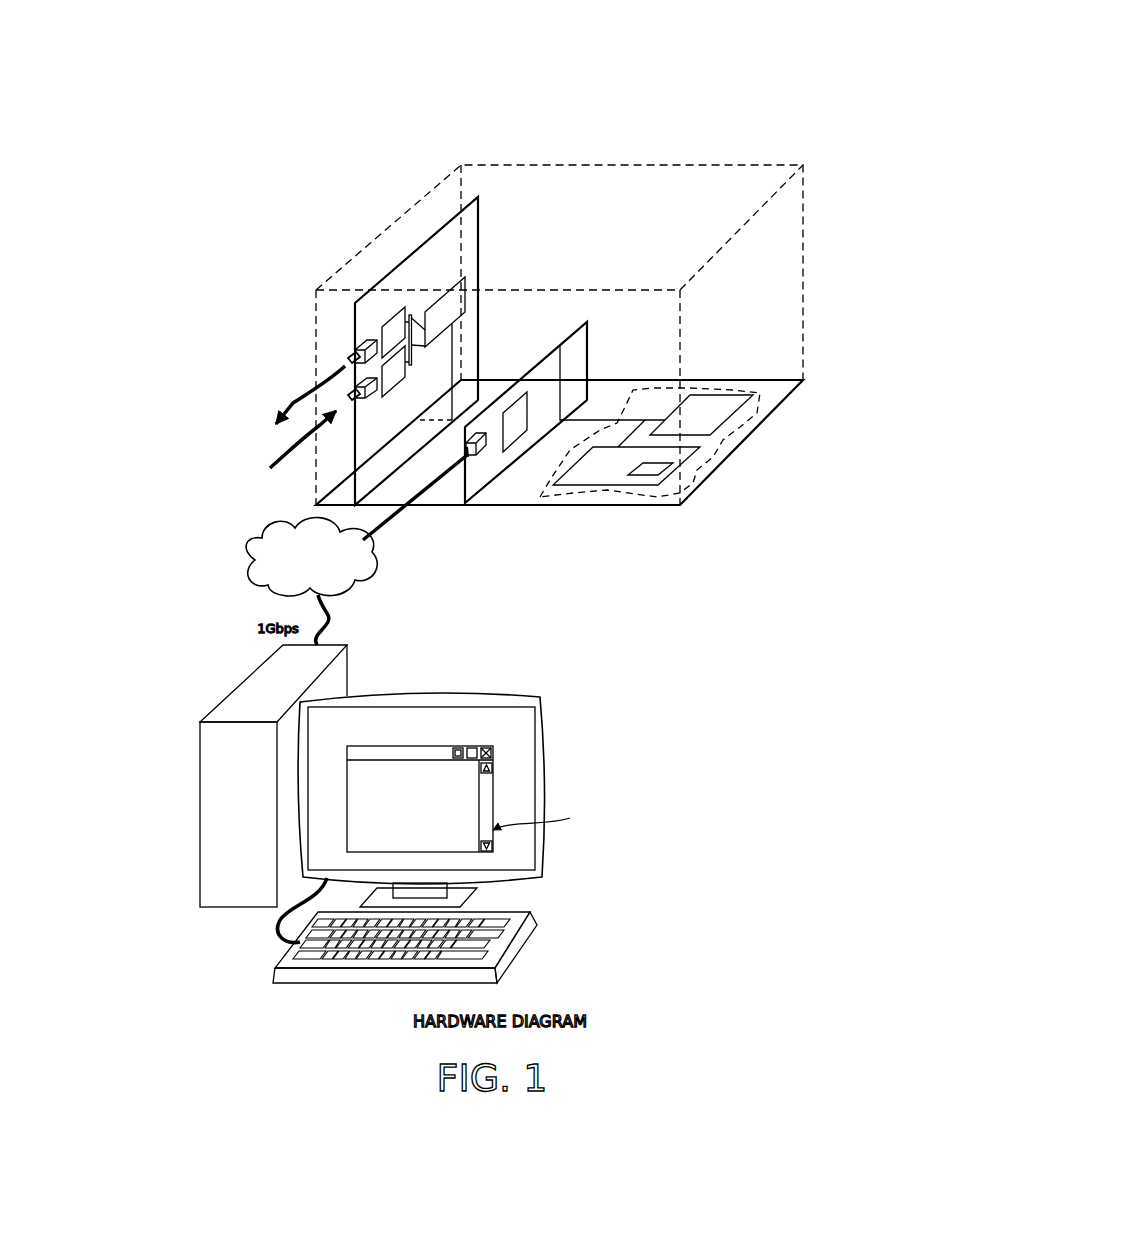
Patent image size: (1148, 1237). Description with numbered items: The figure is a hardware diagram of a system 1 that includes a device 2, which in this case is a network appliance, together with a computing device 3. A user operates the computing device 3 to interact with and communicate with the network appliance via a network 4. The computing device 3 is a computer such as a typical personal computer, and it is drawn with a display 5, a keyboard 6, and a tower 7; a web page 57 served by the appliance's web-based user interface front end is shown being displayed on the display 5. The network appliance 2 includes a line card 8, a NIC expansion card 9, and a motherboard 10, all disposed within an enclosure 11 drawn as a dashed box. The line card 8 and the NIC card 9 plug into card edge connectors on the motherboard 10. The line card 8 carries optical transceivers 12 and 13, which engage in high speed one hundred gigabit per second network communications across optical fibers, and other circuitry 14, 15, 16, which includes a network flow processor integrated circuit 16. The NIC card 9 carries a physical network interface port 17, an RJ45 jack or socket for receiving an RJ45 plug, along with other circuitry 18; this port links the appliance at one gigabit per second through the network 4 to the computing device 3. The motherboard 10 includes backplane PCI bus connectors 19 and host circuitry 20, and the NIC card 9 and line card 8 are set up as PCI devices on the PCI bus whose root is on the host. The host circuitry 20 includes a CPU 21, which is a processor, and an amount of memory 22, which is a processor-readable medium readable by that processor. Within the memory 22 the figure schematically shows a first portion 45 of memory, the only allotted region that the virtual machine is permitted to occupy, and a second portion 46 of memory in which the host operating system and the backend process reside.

The system 1 is at (184, 47).
The device 2 is at (737, 117).
The computing device 3 is at (177, 705).
The network 4 is at (311, 556).
The display 5 is at (538, 732).
The keyboard 6 is at (516, 947).
The tower 7 is at (273, 776).
The line card 8 is at (401, 256).
The NIC expansion card 9 is at (556, 327).
The motherboard 10 is at (775, 388).
The enclosure 11 is at (805, 215).
The optical transceiver 12 is at (367, 338).
The optical transceiver 13 is at (370, 403).
The circuitry 14 is at (393, 332).
The circuitry 15 is at (393, 371).
The network flow processor integrated circuit 16 is at (445, 312).
The physical network interface port 17 is at (471, 463).
The circuitry 18 is at (515, 422).
The backplane PCI bus connectors 19 is at (610, 422).
The host circuitry 20 is at (728, 437).
The CPU 21 is at (701, 415).
The memory 22 is at (577, 488).
The first portion of memory 45 is at (652, 478).
The second portion of memory 46 is at (598, 485).
The web page 57 is at (410, 746).